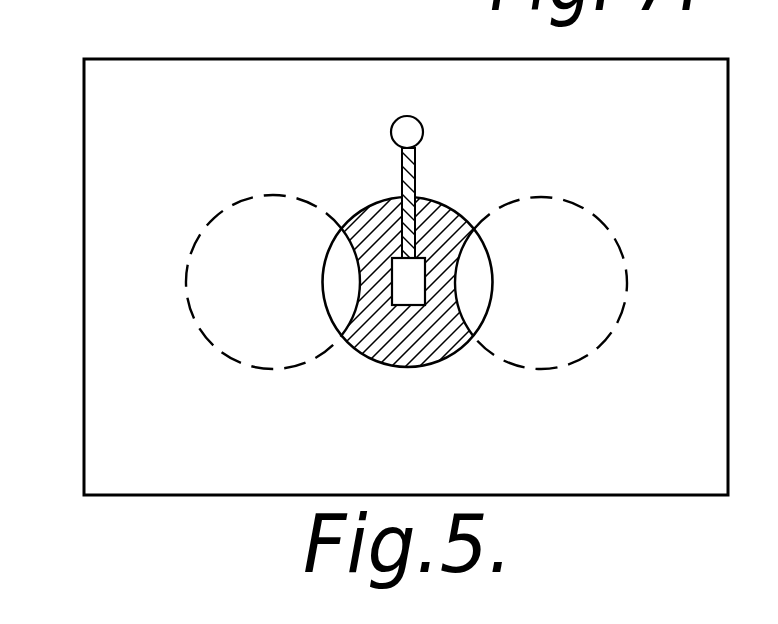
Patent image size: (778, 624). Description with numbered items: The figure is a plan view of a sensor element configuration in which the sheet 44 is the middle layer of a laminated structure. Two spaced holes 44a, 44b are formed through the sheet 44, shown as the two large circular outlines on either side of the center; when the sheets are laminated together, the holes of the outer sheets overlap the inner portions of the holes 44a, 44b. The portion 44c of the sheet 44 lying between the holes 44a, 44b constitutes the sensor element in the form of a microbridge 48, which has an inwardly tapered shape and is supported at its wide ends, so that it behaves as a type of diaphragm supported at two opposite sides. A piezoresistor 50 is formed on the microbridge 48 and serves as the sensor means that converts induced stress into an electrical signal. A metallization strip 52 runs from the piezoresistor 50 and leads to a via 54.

The sheet 44 is at (84, 349).
The hole 44a is at (222, 213).
The hole 44b is at (572, 199).
The portion of the sheet 44c is at (452, 207).
The microbridge 48 is at (353, 216).
The piezoresistor 50 is at (408, 291).
The metallization strip 52 is at (418, 162).
The via 54 is at (405, 130).